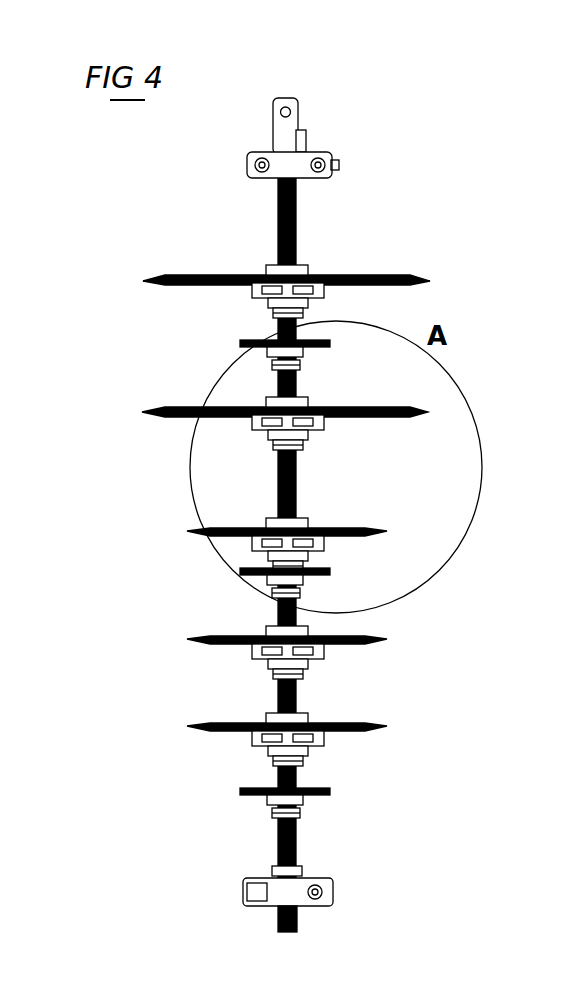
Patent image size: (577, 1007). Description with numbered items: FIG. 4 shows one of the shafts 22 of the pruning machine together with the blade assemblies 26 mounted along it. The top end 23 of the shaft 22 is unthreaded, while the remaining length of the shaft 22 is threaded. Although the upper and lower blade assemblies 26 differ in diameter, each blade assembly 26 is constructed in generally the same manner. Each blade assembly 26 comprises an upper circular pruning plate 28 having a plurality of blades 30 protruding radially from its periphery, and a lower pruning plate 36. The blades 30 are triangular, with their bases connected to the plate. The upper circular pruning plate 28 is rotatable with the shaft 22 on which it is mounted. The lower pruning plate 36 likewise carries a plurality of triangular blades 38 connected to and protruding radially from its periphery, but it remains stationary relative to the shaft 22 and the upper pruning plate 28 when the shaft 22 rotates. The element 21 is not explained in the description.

The upper crossarm 21 is at (207, 275).
The central rod 22 is at (300, 238).
The upper connector clevis 23 is at (280, 198).
The crossarms 26 is at (180, 405).
The clamp fitting 28 is at (363, 277).
The crossarm end portions 30 is at (152, 277).
The fastener 36 is at (348, 287).
The crossarm tip 38 is at (152, 282).